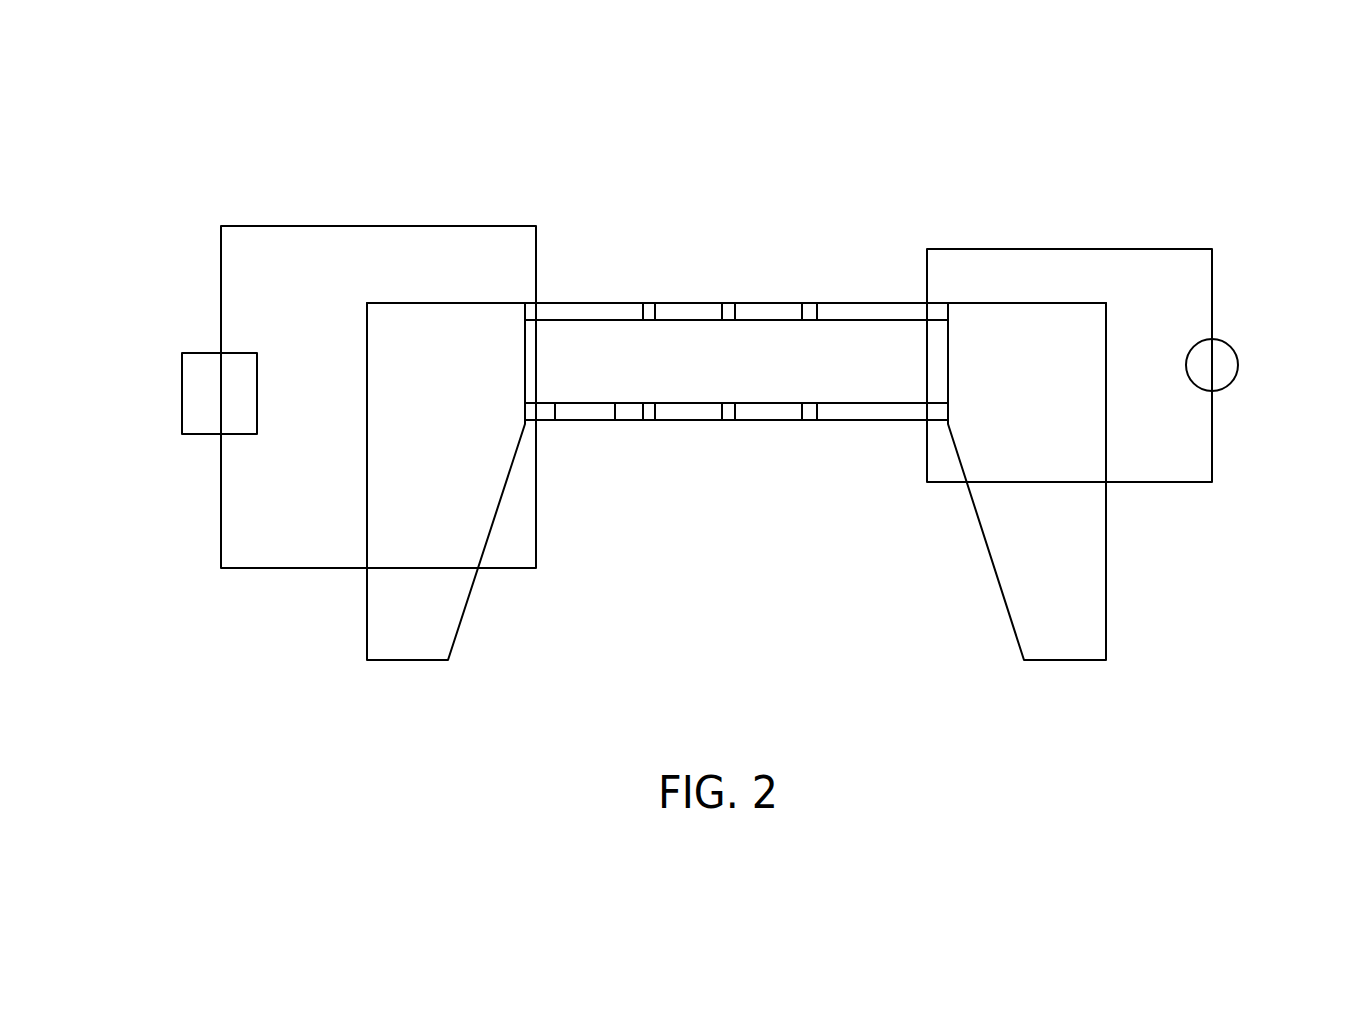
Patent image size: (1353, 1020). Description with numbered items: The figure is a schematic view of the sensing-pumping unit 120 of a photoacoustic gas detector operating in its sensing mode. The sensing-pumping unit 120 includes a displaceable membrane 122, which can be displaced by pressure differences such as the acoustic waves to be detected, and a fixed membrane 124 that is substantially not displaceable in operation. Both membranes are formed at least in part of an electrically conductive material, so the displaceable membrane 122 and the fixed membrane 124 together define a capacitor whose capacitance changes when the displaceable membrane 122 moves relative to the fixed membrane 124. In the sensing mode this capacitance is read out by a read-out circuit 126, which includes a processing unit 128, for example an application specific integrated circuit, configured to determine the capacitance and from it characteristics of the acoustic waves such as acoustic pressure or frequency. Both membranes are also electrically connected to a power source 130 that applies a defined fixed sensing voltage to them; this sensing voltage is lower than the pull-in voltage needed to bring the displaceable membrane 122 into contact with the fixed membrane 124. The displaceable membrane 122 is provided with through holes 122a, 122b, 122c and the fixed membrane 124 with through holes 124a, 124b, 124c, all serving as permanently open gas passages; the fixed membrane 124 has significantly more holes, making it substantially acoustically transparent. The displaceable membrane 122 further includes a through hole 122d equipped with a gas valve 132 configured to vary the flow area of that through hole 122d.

The sensing-pumping unit 120 is at (884, 210).
The displaceable membrane 122 is at (888, 421).
The through hole 122a is at (812, 421).
The through hole 122b is at (730, 410).
The through hole 122c is at (648, 410).
The through hole 122d is at (593, 421).
The fixed membrane 124 is at (580, 312).
The through hole 124a is at (809, 312).
The through hole 124b is at (729, 312).
The through hole 124c is at (649, 312).
The read-out circuit 126 is at (348, 225).
The processing unit 128 is at (215, 385).
The power source 130 is at (1087, 248).
The gas valve 132 is at (572, 421).